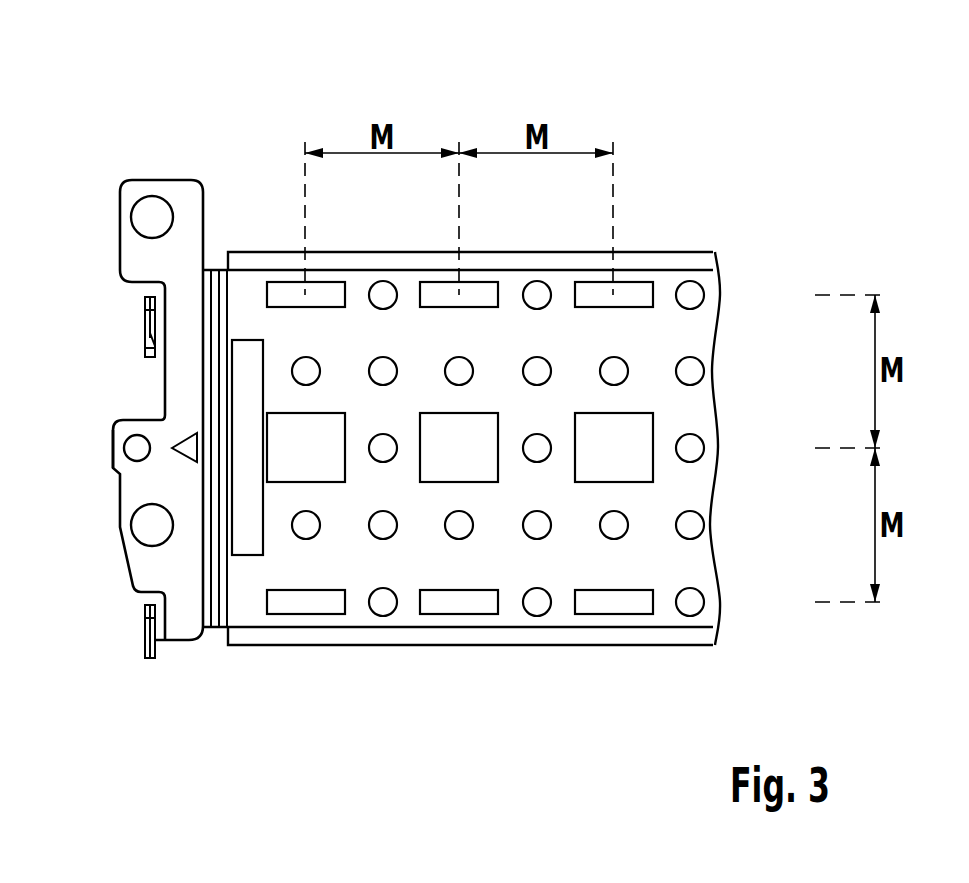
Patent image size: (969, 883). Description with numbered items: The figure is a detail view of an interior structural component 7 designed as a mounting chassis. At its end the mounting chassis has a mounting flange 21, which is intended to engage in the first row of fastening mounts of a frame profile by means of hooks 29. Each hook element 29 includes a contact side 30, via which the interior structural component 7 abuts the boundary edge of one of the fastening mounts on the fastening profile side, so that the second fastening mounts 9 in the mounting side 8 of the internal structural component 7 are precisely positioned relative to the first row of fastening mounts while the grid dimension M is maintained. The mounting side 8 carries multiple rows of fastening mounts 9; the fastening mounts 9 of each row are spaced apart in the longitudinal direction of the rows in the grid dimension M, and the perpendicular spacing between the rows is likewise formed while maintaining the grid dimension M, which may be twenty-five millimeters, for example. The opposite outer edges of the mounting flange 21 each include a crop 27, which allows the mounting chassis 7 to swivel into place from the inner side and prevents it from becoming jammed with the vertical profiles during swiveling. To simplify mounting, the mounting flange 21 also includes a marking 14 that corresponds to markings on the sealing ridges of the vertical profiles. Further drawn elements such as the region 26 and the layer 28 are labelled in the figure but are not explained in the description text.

The interior structural component 7 is at (606, 79).
The mounting side 8 is at (511, 292).
The fastening mounts 9 is at (322, 292).
The marking 14 is at (172, 447).
The mounting flange 21 is at (185, 193).
The recess 26 is at (122, 392).
The crop 27 is at (119, 189).
The connection layer 28 is at (212, 268).
The hooks 29 is at (145, 318).
The contact side 30 is at (147, 348).